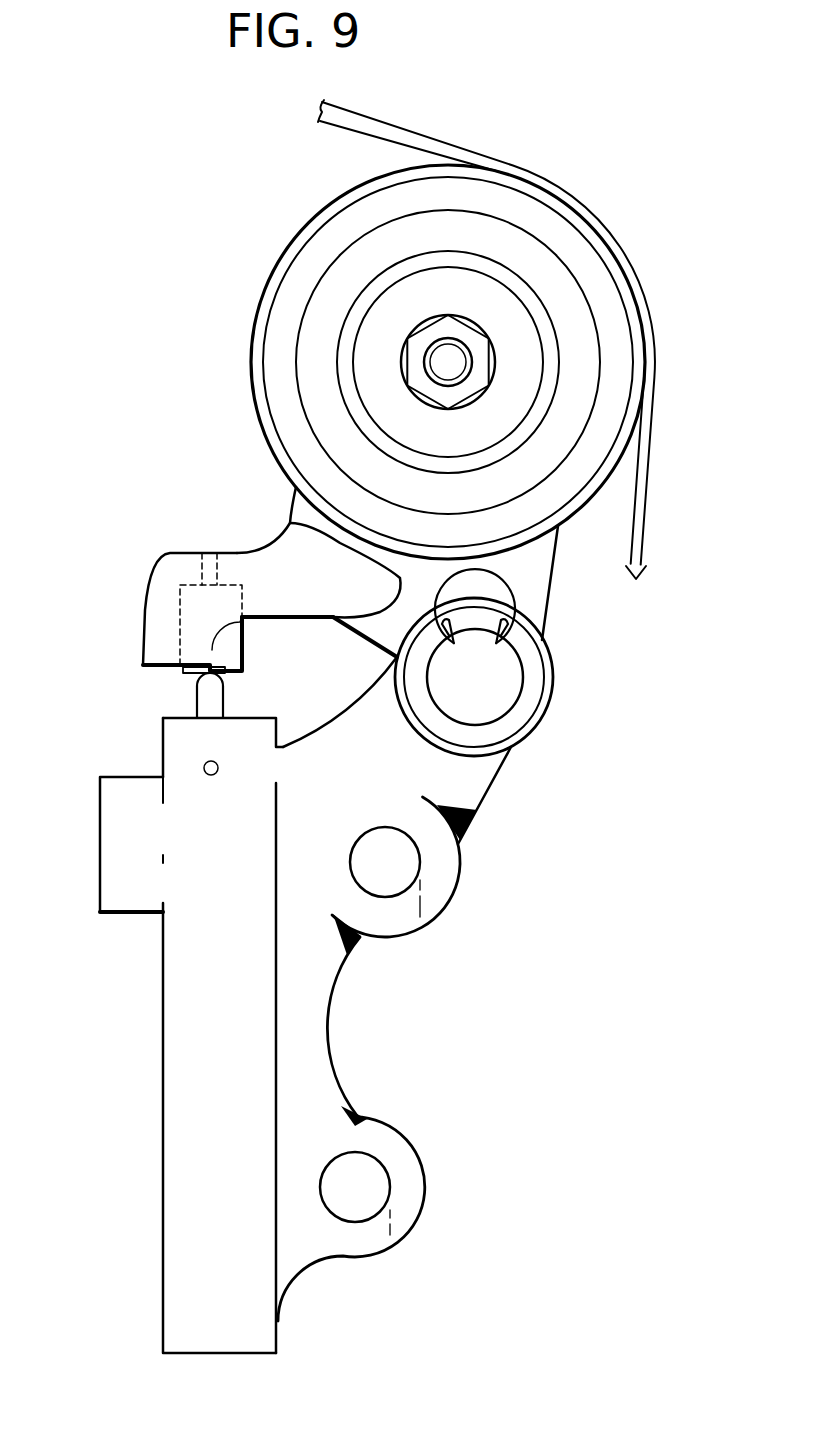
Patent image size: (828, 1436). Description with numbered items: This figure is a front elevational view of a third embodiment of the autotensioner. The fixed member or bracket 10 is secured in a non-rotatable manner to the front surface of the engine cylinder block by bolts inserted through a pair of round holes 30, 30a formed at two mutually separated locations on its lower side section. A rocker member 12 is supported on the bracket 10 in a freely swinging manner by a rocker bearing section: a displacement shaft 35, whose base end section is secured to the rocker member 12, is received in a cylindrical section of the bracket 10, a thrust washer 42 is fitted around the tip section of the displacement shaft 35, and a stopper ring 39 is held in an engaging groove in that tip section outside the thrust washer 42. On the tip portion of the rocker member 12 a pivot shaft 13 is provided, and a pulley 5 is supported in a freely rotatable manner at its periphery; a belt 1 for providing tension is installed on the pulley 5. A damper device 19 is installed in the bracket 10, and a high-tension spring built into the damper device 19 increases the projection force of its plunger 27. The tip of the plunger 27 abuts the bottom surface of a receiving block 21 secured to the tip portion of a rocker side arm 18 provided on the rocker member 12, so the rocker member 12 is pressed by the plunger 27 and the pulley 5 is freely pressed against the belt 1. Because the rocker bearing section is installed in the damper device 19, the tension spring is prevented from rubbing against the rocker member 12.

The belt 1 is at (556, 182).
The pulley 5 is at (638, 377).
The pivot shaft 13 is at (440, 364).
The rocker member 12 is at (545, 603).
The thrust washer 42 is at (535, 693).
The stopper ring 39 is at (510, 712).
The displacement shaft 35 is at (507, 667).
The rocker side arm 18 is at (148, 645).
The receiving block 21 is at (187, 673).
The plunger 27 is at (223, 694).
The damper device 19 is at (152, 1066).
The bracket 10 is at (389, 1058).
The round hole 30 is at (418, 874).
The round hole 30a is at (387, 1198).